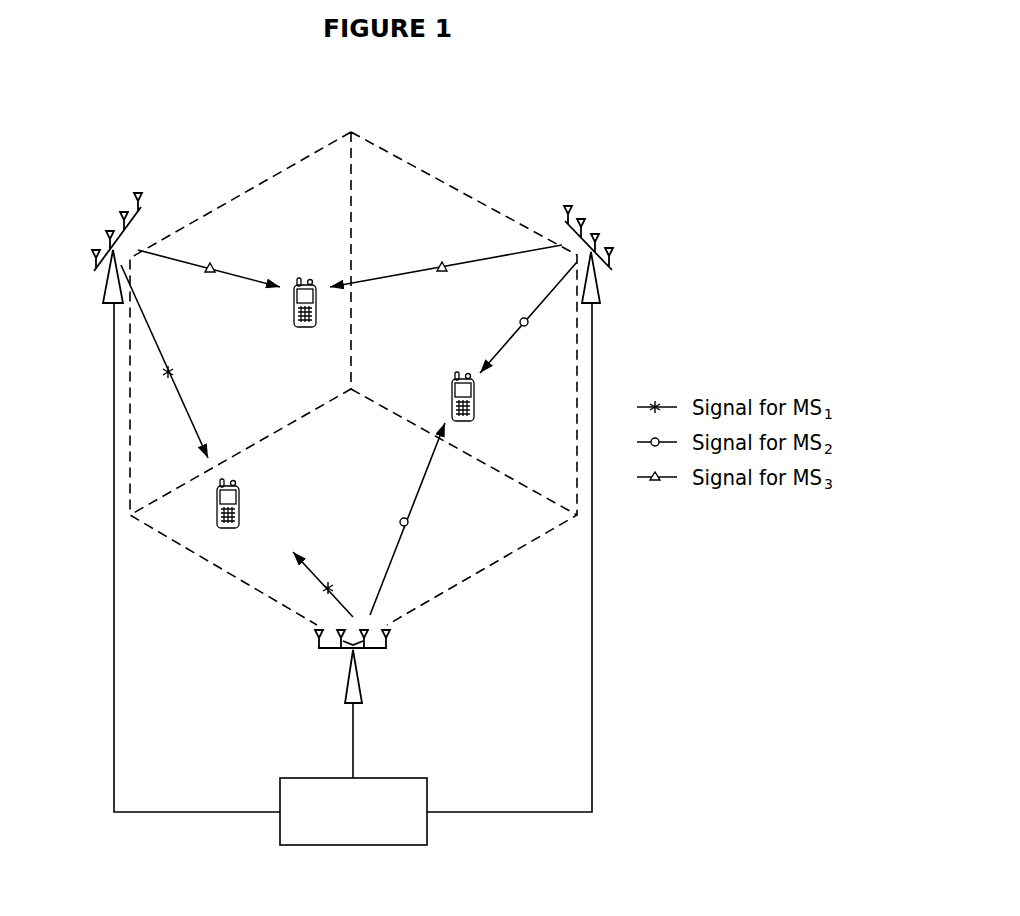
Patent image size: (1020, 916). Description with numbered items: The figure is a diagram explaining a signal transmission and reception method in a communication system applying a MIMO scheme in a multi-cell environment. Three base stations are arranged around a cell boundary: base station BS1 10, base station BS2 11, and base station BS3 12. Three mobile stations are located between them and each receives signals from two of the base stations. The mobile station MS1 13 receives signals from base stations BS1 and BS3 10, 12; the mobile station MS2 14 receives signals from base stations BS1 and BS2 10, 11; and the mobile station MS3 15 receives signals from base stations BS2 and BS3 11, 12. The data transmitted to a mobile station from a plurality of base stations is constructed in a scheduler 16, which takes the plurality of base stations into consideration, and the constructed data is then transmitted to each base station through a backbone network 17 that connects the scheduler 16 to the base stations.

The base station BS1 10 is at (410, 688).
The base station BS2 11 is at (643, 290).
The base station BS3 12 is at (73, 330).
The mobile station MS1 13 is at (292, 518).
The mobile station MS2 14 is at (500, 400).
The mobile station MS3 15 is at (265, 218).
The scheduler 16 is at (408, 838).
The backbone network 17 is at (653, 803).